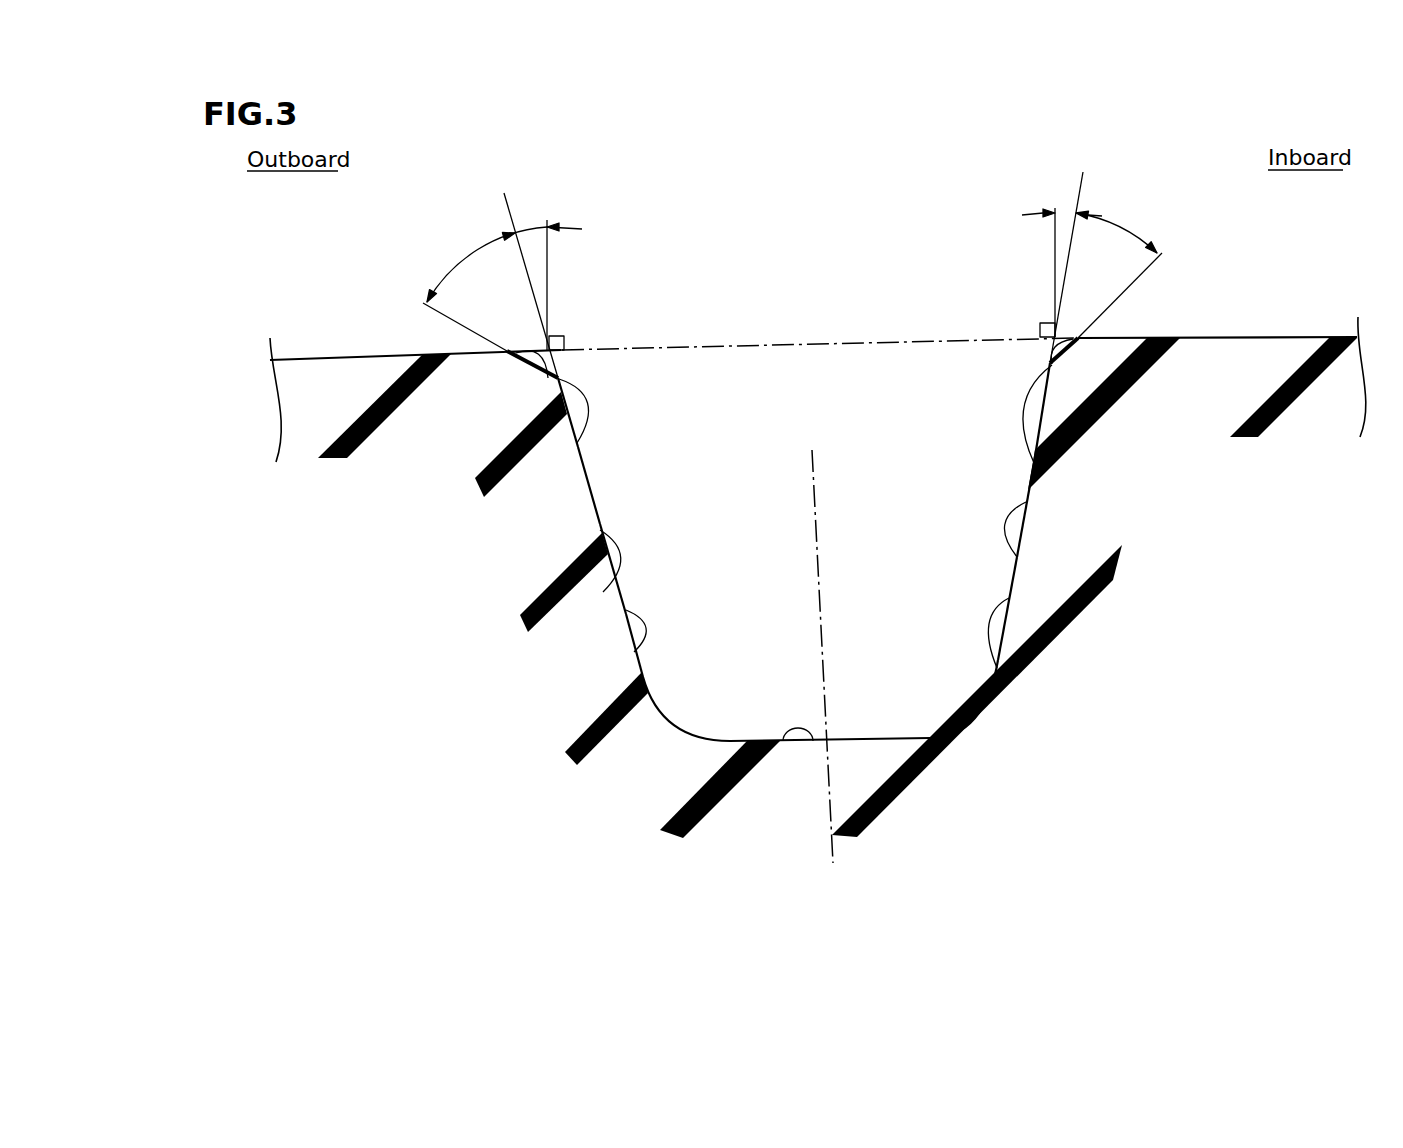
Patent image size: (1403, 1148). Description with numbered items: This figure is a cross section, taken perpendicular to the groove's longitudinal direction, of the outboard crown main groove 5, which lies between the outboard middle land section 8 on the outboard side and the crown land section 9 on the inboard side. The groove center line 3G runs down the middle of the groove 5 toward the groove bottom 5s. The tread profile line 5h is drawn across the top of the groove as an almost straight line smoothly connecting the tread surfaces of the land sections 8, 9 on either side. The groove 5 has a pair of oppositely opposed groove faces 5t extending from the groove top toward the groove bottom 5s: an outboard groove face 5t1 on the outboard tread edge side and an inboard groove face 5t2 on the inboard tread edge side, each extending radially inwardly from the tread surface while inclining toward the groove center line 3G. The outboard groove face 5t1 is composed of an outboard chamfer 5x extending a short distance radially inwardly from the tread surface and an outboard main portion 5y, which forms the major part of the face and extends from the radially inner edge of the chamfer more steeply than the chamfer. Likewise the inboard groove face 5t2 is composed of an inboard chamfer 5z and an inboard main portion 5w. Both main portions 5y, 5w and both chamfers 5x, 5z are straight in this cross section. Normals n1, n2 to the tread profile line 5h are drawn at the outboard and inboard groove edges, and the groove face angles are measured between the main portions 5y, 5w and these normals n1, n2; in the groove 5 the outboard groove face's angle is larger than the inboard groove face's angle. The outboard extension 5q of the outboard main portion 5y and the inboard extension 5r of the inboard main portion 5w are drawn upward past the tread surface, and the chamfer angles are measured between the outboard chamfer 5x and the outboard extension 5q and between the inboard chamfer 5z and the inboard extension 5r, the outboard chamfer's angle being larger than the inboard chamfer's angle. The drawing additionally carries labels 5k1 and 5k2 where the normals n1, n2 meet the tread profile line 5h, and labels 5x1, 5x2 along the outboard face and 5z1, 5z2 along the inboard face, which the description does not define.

The outboard crown main groove 5 is at (905, 531).
The outboard middle land section 8 is at (345, 345).
The crown land section 9 is at (1260, 335).
The tread profile line 5h is at (713, 345).
The groove center line 3G is at (815, 517).
The outboard extension 5q is at (511, 218).
The inboard extension 5r is at (1082, 193).
The normal to the tread profile line n1 is at (550, 290).
The normal to the tread profile line n2 is at (1052, 285).
The outboard groove edge point 5k1 is at (557, 334).
The inboard groove edge point 5k2 is at (1050, 337).
The outboard chamfer 5x is at (549, 377).
The outboard groove wall lower portion 5x1 is at (578, 445).
The outboard chamfer portion 5x2 is at (512, 351).
The outboard main portion 5y is at (628, 604).
The inboard chamfer 5z is at (1060, 345).
The inboard groove wall lower portion 5z1 is at (1040, 448).
The inboard chamfer portion 5z2 is at (1078, 338).
The inboard main portion 5w is at (1018, 552).
The groove bottom 5s is at (780, 745).
The pair of oppositely opposed groove faces 5t is at (828, 675).
The outboard groove face 5t1 is at (647, 630).
The inboard groove face 5t2 is at (1007, 657).